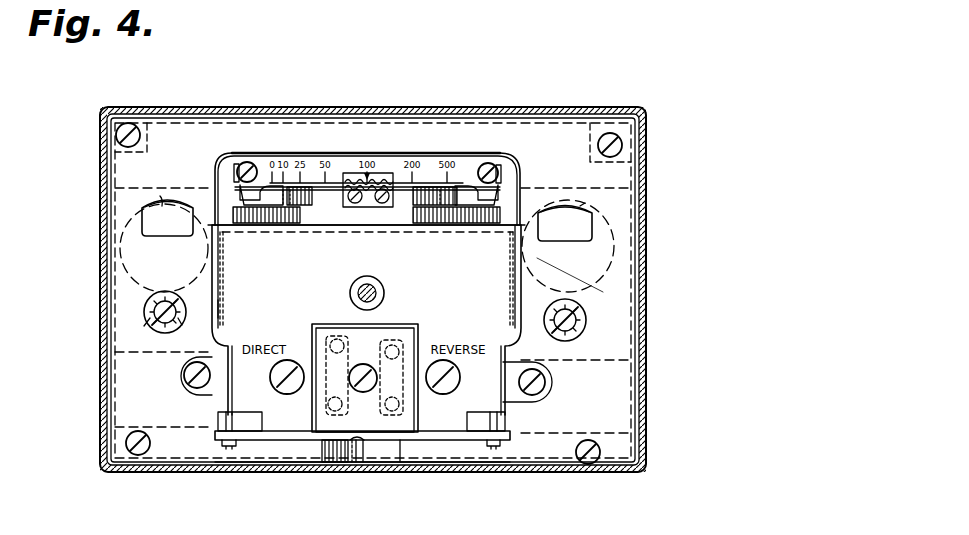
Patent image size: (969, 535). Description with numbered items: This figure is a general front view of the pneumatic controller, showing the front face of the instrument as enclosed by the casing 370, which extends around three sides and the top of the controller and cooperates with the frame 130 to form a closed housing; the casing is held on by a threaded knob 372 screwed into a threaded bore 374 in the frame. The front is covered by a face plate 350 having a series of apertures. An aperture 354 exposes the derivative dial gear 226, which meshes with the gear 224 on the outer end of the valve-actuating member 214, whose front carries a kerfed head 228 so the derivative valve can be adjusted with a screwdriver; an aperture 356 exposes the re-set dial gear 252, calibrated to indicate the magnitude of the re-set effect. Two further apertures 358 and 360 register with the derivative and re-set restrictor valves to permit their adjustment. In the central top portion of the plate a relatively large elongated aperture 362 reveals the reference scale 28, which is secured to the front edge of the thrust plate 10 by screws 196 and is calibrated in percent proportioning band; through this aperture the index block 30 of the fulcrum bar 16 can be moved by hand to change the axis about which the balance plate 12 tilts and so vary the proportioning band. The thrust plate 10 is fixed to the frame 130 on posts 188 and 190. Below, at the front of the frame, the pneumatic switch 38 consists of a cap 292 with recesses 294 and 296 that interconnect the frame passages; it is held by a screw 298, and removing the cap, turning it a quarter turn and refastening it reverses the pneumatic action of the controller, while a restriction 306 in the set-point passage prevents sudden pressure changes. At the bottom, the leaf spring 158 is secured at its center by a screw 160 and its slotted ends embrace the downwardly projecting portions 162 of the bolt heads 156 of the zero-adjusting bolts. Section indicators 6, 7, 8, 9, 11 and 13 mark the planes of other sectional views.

The casing 370 is at (158, 108).
The face plate 350 is at (568, 140).
The elongated aperture 362 is at (430, 152).
The reference scale 28 is at (263, 160).
The screws 196 is at (240, 170).
The thrust plate 10 is at (506, 172).
The dial gear 226 is at (162, 200).
The aperture 354 is at (142, 211).
The dial gear 252 is at (580, 206).
The aperture 356 is at (594, 217).
The aperture 358 is at (150, 312).
The aperture 360 is at (584, 318).
The post 188 is at (312, 205).
The index block 30 is at (378, 205).
The post 190 is at (431, 203).
The fulcrum bar 16 is at (342, 198).
The balance plate 12 is at (338, 316).
The threaded knob 372 is at (357, 285).
The threaded bore 374 is at (377, 292).
The pneumatic switch 38 is at (412, 330).
The cap 292 is at (376, 332).
The restriction 306 is at (322, 328).
The valve-actuating member 214 is at (221, 310).
The gear 224 is at (158, 324).
The kerfed head 228 is at (176, 322).
The head 156 is at (222, 419).
The downwardly projecting portions 162 is at (222, 443).
The recess 294 is at (307, 396).
The screw 298 is at (380, 396).
The recess 296 is at (420, 396).
The leaf spring 158 is at (323, 441).
The screw 160 is at (368, 442).
The frame 130 is at (440, 452).
The section line 7 is at (222, 102).
The section line 11 is at (371, 104).
The section line 6 is at (518, 106).
The section line 13 is at (170, 174).
The section line 8 is at (222, 208).
The section line 9 is at (222, 237).